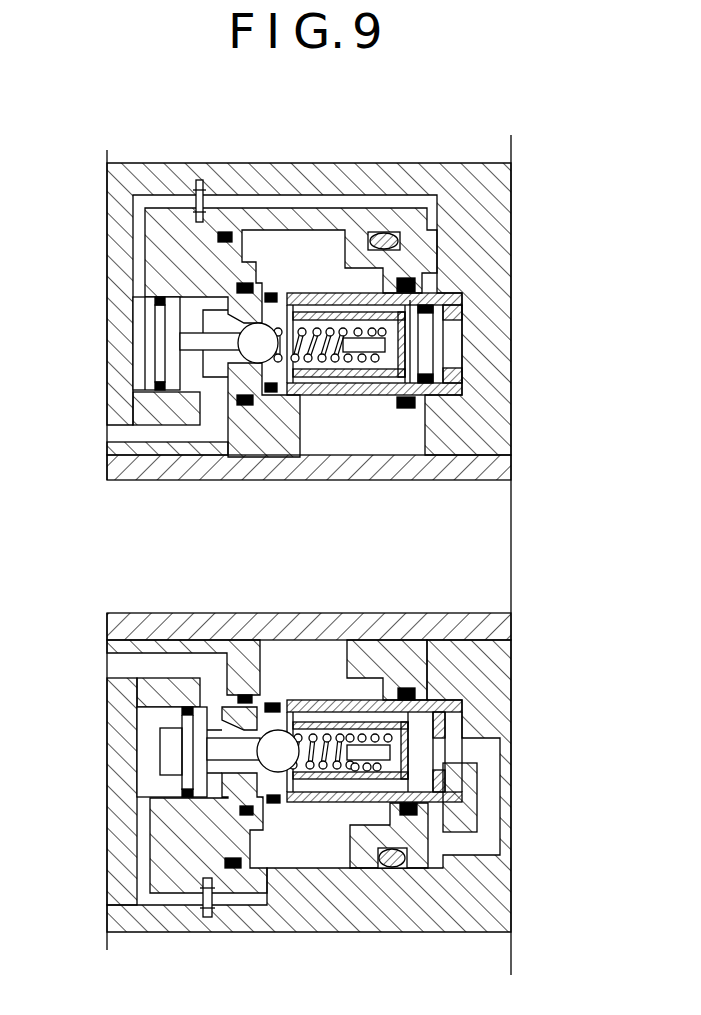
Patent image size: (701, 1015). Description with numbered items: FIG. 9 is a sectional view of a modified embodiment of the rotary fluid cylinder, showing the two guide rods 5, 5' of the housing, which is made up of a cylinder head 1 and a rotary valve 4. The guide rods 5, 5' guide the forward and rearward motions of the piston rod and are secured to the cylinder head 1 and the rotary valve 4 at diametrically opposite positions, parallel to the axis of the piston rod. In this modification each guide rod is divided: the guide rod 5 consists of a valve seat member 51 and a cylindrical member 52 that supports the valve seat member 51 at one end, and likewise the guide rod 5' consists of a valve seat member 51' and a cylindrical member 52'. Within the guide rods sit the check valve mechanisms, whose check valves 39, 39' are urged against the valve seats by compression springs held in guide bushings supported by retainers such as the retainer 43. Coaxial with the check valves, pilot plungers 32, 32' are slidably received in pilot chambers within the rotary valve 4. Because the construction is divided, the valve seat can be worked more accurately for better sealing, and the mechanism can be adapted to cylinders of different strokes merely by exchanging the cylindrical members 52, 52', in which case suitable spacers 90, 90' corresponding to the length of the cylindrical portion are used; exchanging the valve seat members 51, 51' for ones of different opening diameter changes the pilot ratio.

The cylinder head 1 is at (478, 180).
The rotary valve 4 is at (153, 172).
The guide rod 5 is at (374, 235).
The valve seat member 51 is at (311, 259).
The cylindrical member 52 is at (352, 245).
The spacer 90 is at (432, 307).
The retainer 43 is at (465, 356).
The check valve 39 is at (256, 424).
The pilot plunger 32 is at (149, 343).
The guide rod 5' is at (374, 665).
The valve seat member 51' is at (306, 691).
The cylindrical member 52' is at (357, 673).
The spacer 90' is at (436, 697).
The check valve 39' is at (302, 855).
The pilot plunger 32' is at (159, 752).